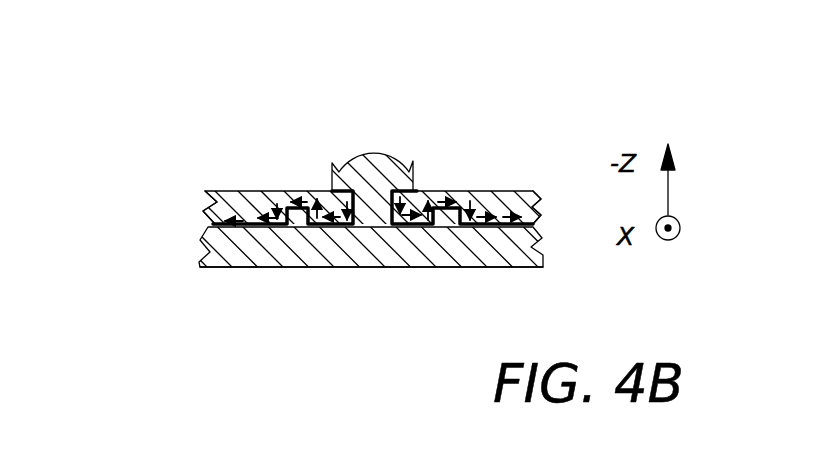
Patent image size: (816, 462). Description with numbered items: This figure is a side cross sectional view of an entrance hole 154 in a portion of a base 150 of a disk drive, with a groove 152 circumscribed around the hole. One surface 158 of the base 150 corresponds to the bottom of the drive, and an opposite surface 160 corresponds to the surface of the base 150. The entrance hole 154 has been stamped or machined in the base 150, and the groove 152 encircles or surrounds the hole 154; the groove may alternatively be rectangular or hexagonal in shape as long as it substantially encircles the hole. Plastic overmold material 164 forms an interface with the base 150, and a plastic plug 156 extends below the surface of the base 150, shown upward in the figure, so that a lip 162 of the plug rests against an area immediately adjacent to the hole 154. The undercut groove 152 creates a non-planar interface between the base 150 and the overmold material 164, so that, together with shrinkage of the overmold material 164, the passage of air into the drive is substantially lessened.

The base 150 is at (525, 190).
The groove 152 is at (280, 192).
The entrance hole 154 is at (357, 192).
The plastic plug 156 is at (347, 167).
The surface 158 is at (215, 192).
The opposite surface 160 is at (502, 228).
The lip 162 is at (425, 190).
The plastic overmold material 164 is at (212, 268).